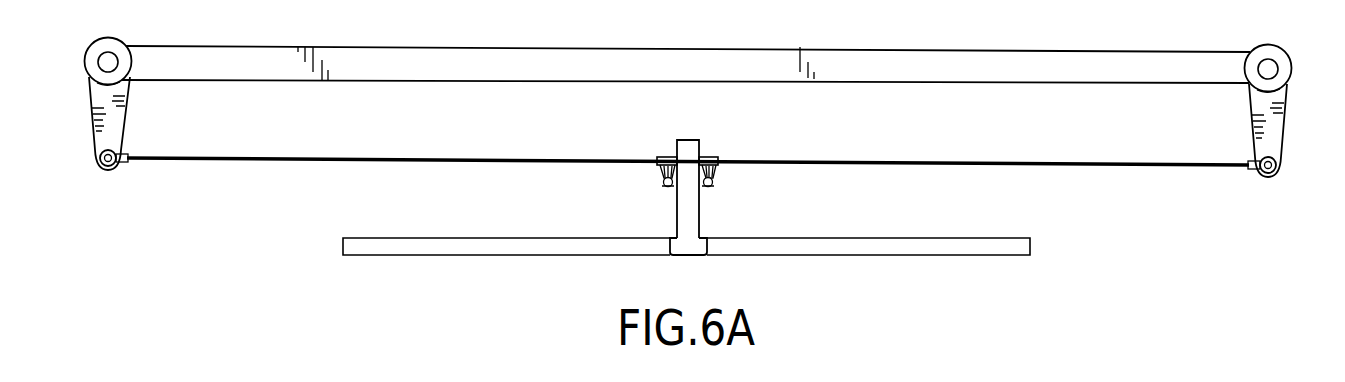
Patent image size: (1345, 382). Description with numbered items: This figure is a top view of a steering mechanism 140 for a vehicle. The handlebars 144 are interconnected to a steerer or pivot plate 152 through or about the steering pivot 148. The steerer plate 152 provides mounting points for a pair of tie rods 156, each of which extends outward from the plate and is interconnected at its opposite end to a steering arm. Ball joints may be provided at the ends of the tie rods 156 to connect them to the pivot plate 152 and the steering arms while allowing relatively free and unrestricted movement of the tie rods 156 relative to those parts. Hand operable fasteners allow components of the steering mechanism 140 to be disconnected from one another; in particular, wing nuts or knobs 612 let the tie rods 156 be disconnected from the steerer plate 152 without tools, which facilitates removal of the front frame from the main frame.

The steering mechanism 140 is at (926, 184).
The handlebars 144 is at (915, 247).
The steering pivot 148 is at (683, 153).
The steerer plate 152 is at (710, 155).
The tie rod 156 is at (280, 162).
The wing nut or knob 612 is at (667, 188).